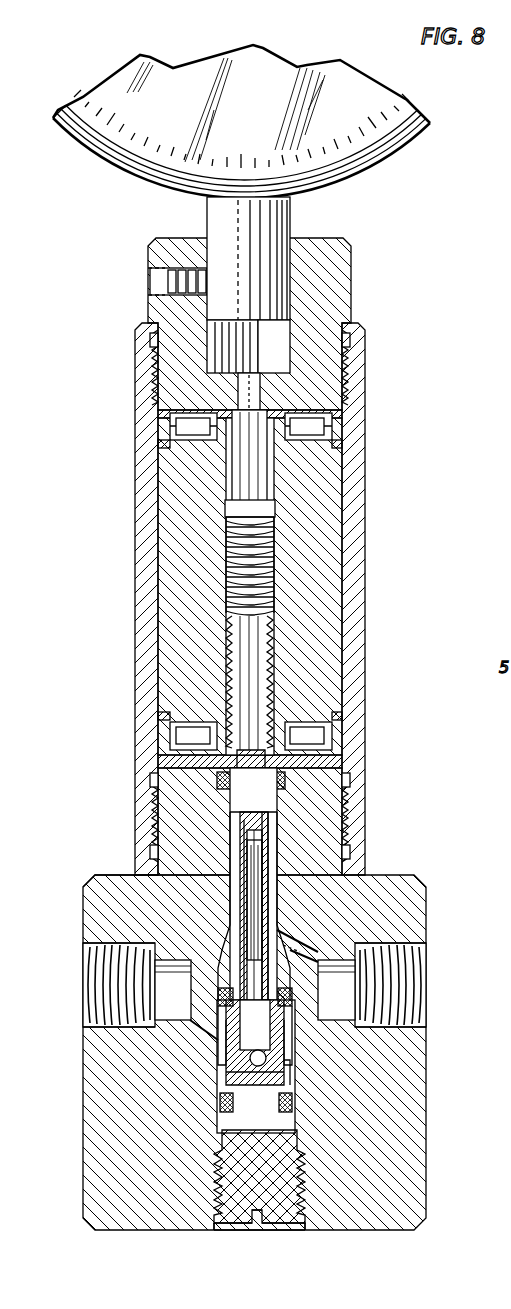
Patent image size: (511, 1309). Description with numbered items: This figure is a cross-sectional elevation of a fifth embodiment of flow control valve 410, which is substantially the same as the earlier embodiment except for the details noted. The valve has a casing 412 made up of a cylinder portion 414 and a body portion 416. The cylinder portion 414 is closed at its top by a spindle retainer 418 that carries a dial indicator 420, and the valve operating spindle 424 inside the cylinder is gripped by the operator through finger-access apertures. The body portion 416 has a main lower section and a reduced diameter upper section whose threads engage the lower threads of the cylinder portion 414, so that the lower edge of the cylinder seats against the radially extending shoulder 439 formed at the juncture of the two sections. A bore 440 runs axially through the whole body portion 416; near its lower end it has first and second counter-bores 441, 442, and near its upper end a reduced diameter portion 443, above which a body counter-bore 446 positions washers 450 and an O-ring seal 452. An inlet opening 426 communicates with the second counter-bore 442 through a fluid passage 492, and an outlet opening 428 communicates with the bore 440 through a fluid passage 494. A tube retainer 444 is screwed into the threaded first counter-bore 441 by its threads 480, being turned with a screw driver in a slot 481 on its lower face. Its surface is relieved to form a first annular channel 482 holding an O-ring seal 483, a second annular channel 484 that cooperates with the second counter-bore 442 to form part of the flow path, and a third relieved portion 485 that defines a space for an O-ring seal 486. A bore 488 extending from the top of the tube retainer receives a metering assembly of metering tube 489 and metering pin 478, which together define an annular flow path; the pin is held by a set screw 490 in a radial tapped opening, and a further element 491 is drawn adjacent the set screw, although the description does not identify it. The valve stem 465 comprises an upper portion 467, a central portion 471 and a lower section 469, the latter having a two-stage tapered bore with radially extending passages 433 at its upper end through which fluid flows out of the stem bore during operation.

The flow control valve 410 is at (410, 291).
The casing 412 is at (113, 689).
The cylinder portion 414 is at (356, 478).
The body portion 416 is at (427, 1150).
The spindle retainer 418 is at (340, 266).
The dial indicator 420 is at (385, 165).
The valve operating spindle 424 is at (325, 563).
The inlet opening 426 is at (83, 1022).
The outlet opening 428 is at (426, 962).
The radially extending passages 433 is at (264, 820).
The shoulder 439 is at (130, 875).
The bore 440 is at (230, 850).
The first counter-bore 441 is at (259, 1176).
The second counter-bore 442 is at (290, 1070).
The reduced diameter portion 443 is at (240, 812).
The tube retainer 444 is at (283, 1210).
The fourth body counter-bore 446 is at (278, 788).
The washers 450 is at (178, 755).
The O-ring seal 452 is at (222, 786).
The valve stem 465 is at (266, 486).
The upper portion 467 is at (238, 385).
The lower section 469 is at (245, 660).
The central portion 471 is at (243, 512).
The metering pin 478 is at (266, 840).
The threads 480 is at (218, 1205).
The slot 481 is at (256, 1224).
The first annular channel 482 is at (292, 1102).
The O-ring seal 483 is at (226, 1105).
The second annular channel 484 is at (290, 1040).
The third relieved portion 485 is at (288, 1003).
The O-ring seal 486 is at (220, 996).
The bore 488 is at (243, 930).
The metering tube 489 is at (238, 905).
The set screw 490 is at (232, 1062).
The ball 491 is at (248, 1118).
The fluid passage 492 is at (200, 1030).
The fluid passage 494 is at (300, 938).